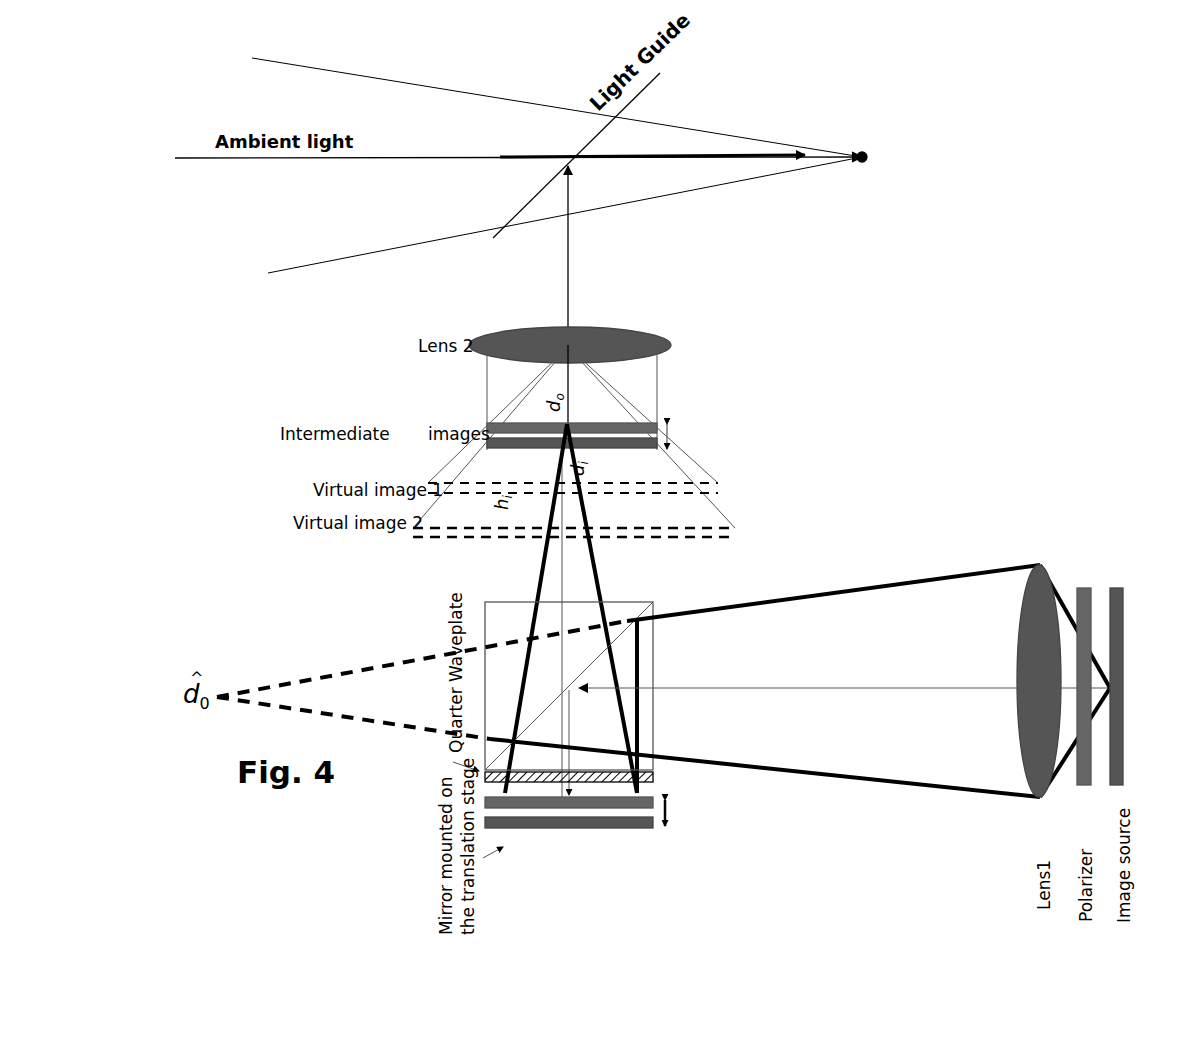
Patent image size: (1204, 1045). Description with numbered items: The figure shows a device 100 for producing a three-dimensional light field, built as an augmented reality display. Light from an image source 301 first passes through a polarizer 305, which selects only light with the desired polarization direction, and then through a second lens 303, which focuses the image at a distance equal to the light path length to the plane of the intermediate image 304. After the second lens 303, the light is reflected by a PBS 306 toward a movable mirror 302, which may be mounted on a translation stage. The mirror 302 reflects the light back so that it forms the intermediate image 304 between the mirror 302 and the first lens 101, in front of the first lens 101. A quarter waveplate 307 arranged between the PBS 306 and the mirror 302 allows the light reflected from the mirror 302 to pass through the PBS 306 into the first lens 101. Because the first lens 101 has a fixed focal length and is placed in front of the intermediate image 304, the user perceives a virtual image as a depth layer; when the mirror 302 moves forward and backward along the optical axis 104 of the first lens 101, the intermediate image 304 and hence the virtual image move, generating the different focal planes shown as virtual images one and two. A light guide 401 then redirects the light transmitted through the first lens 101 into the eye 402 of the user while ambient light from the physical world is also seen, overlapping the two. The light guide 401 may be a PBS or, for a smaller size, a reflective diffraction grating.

The device 100 is at (898, 323).
The first lens 101 is at (617, 330).
The optical axis 104 is at (568, 292).
The image source 301 is at (1122, 588).
The mirror 302 is at (630, 832).
The second lens 303 is at (1037, 563).
The intermediate image 304 is at (657, 422).
The polarizer 305 is at (1087, 588).
The PBS 306 is at (657, 645).
The quarter waveplate 307 is at (653, 782).
The light guide 401 is at (580, 148).
The eye of user 402 is at (867, 153).